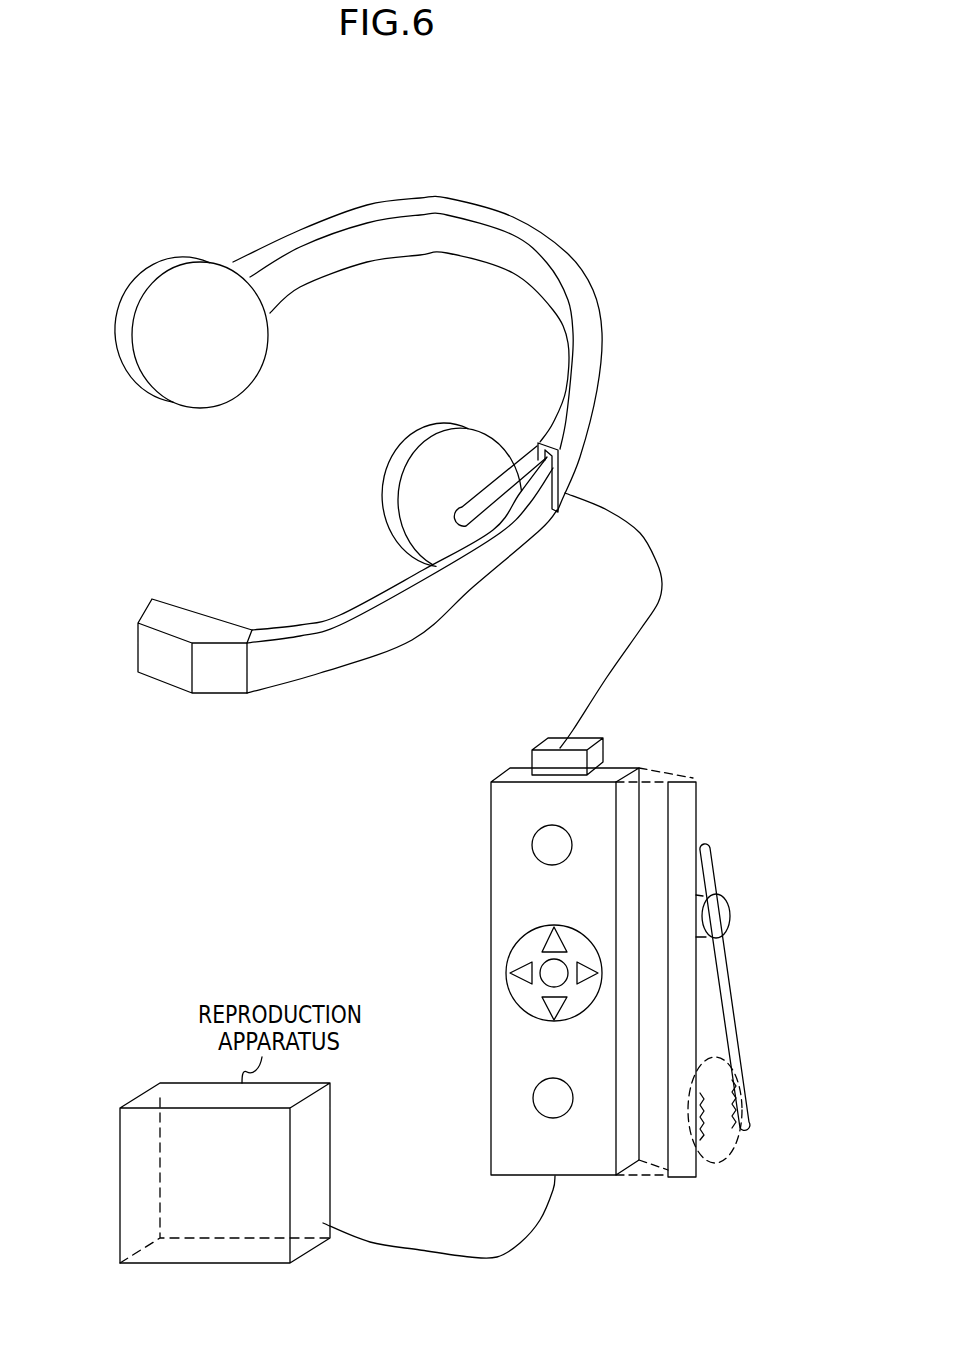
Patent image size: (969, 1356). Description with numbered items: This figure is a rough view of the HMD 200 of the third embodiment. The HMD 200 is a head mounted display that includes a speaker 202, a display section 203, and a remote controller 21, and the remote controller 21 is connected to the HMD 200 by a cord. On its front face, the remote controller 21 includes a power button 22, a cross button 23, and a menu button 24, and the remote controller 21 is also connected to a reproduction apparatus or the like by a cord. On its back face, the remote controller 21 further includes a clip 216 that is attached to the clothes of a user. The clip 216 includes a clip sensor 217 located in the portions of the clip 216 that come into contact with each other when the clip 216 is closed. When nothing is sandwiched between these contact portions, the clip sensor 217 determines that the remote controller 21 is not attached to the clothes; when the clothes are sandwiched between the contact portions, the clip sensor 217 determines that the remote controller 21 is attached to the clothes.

The HMD 200 is at (150, 196).
The speaker 202 is at (423, 445).
The display section 203 is at (216, 688).
The remote controller 21 is at (509, 774).
The power button 22 is at (557, 826).
The cross button 23 is at (540, 1021).
The menu button 24 is at (593, 1075).
The clip 216 is at (730, 908).
The clip sensor 217 is at (728, 1160).